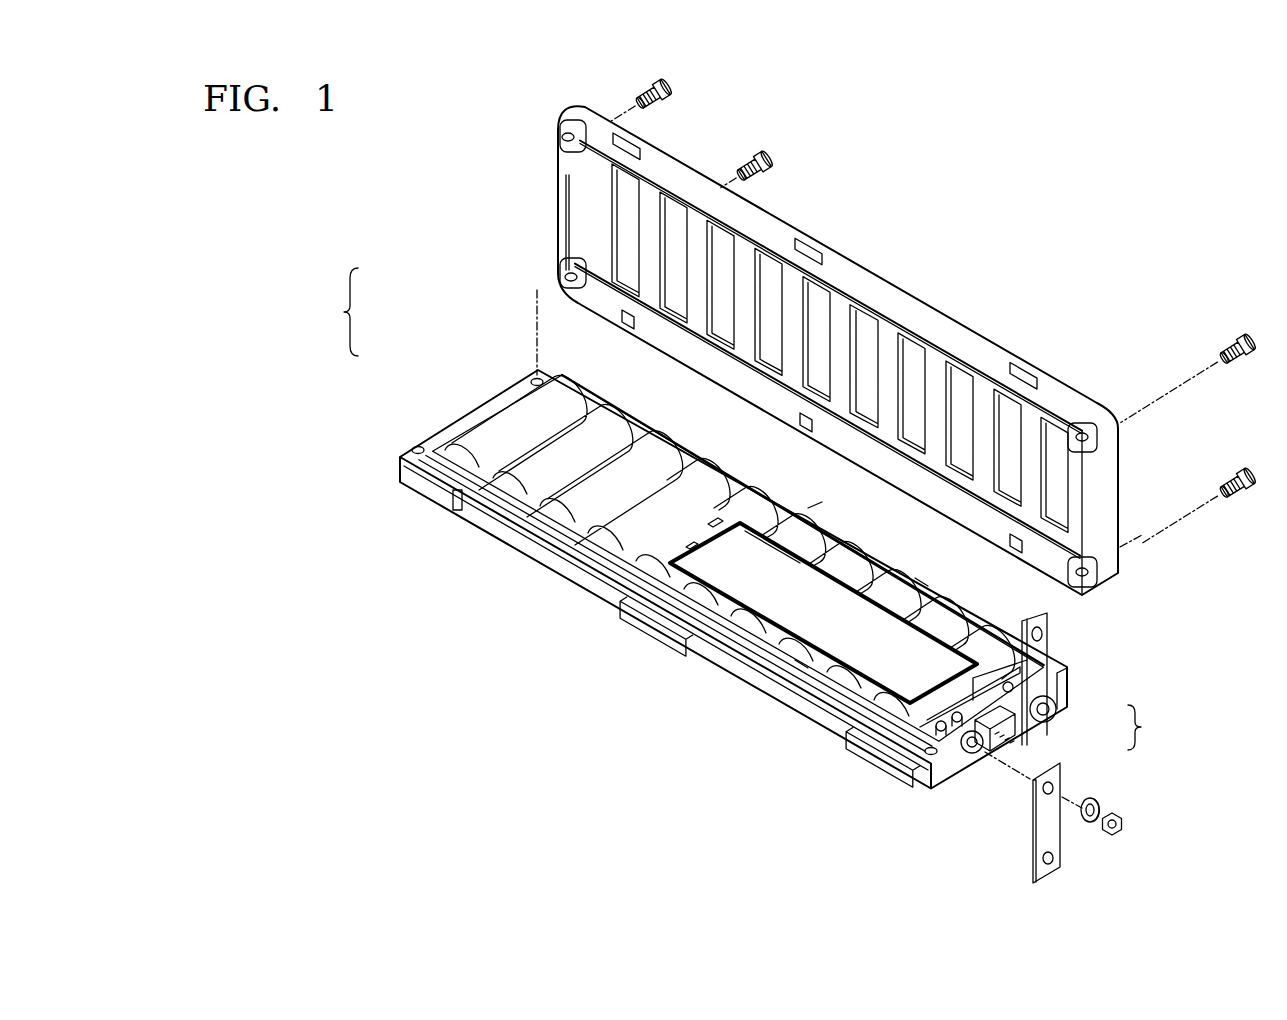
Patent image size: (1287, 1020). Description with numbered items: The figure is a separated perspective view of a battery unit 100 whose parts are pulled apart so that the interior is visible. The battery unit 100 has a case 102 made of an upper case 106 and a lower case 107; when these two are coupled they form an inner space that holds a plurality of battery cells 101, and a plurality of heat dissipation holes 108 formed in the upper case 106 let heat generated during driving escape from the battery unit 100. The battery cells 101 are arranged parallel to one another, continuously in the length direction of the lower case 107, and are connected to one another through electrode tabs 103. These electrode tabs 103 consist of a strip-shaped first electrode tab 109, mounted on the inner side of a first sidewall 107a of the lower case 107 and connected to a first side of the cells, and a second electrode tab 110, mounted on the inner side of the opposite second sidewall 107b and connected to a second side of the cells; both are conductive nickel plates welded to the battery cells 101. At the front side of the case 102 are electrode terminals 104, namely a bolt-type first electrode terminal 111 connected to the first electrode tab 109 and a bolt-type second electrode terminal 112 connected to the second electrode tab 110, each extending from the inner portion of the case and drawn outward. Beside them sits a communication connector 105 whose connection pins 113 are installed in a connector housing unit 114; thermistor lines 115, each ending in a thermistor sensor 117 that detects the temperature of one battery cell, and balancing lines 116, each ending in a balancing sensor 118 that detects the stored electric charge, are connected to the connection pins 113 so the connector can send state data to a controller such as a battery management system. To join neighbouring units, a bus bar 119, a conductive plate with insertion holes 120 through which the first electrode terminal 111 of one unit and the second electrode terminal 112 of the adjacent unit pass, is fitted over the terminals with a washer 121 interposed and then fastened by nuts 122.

The battery unit 100 is at (1000, 288).
The battery cells 101 is at (545, 458).
The case 102 is at (336, 312).
The electrode tabs 103 is at (896, 524).
The electrode terminals 104 is at (1150, 727).
The communication connector 105 is at (1040, 700).
The upper case 106 is at (553, 252).
The lower case 107 is at (466, 404).
The first sidewall 107a is at (600, 408).
The second sidewall 107b is at (478, 525).
The heat dissipation holes 108 is at (627, 218).
The first electrode tab 109 is at (880, 567).
The second electrode tab 110 is at (800, 662).
The first electrode terminal 111 is at (1050, 712).
The second electrode terminal 112 is at (990, 745).
The connection pins 113 is at (1008, 748).
The connector housing unit 114 is at (912, 740).
The thermistor lines 115 is at (815, 505).
The balancing lines 116 is at (921, 580).
The thermistor sensor 117 is at (697, 547).
The balancing sensor 118 is at (718, 525).
The bus bar 119 is at (1026, 821).
The insertion holes 120 is at (1058, 788).
The washer 121 is at (1100, 807).
The nuts 122 is at (1124, 824).